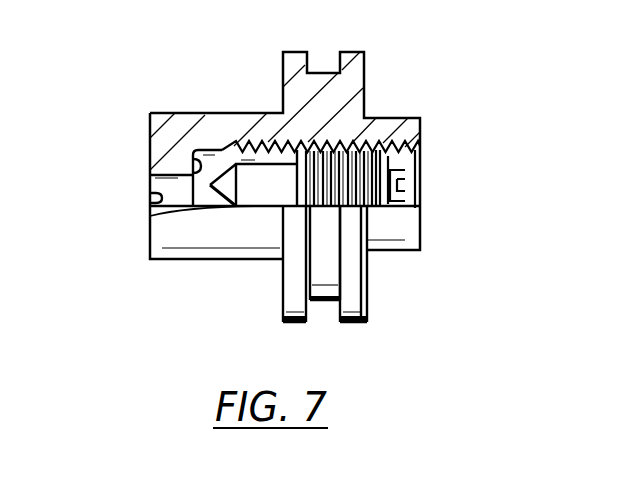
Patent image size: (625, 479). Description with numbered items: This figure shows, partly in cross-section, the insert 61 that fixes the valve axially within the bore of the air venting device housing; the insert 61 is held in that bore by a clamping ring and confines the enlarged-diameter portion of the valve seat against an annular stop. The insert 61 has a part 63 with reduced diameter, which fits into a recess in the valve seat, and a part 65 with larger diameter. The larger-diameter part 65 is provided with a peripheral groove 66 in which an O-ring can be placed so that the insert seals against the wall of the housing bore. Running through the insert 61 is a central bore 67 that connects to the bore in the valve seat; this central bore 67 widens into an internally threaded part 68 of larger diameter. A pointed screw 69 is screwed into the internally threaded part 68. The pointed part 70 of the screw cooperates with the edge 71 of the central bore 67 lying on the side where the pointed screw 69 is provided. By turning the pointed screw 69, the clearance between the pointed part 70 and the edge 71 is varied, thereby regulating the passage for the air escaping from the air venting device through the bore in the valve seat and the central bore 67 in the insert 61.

The insert 61 is at (200, 88).
The part with reduced diameter 63 is at (158, 113).
The part with larger diameter 65 is at (367, 322).
The peripheral groove 66 is at (323, 305).
The central bore 67 is at (150, 197).
The internally threaded part 68 is at (247, 148).
The pointed screw 69 is at (378, 170).
The pointed part 70 is at (212, 186).
The edge of the bore 71 is at (192, 163).